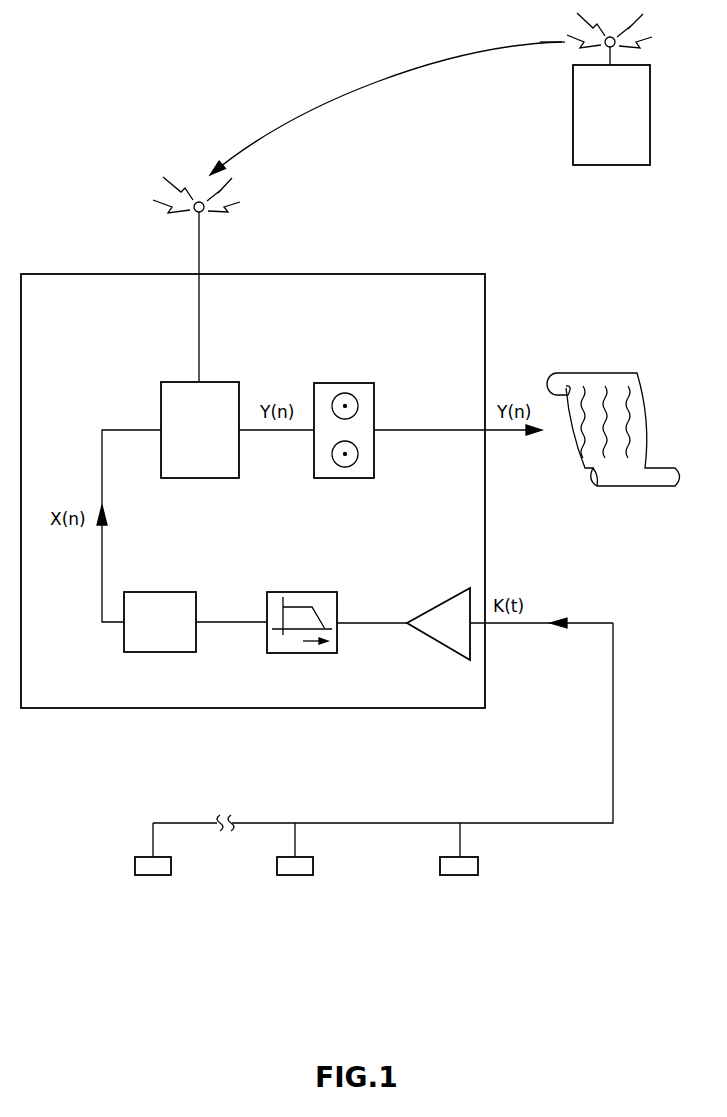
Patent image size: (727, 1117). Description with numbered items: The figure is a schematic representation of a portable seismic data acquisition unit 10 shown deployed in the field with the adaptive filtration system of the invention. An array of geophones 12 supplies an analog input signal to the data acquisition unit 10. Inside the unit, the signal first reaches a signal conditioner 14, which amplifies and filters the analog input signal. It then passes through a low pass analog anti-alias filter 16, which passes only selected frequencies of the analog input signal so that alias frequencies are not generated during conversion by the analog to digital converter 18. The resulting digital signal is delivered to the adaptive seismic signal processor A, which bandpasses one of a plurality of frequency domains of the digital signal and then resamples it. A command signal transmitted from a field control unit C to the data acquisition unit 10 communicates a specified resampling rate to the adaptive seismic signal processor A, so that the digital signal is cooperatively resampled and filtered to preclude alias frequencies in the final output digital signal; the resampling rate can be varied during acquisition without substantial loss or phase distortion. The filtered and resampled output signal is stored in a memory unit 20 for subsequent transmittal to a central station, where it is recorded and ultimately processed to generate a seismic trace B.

The portable seismic data acquisition unit 10 is at (347, 273).
The array of geophones 12 is at (140, 876).
The signal conditioner 14 is at (430, 637).
The low pass analog anti-alias filter 16 is at (283, 653).
The analog to digital converter 18 is at (142, 653).
The memory unit 20 is at (333, 383).
The adaptive seismic signal processor A is at (210, 382).
The seismic trace B is at (637, 380).
The field control unit C is at (650, 123).